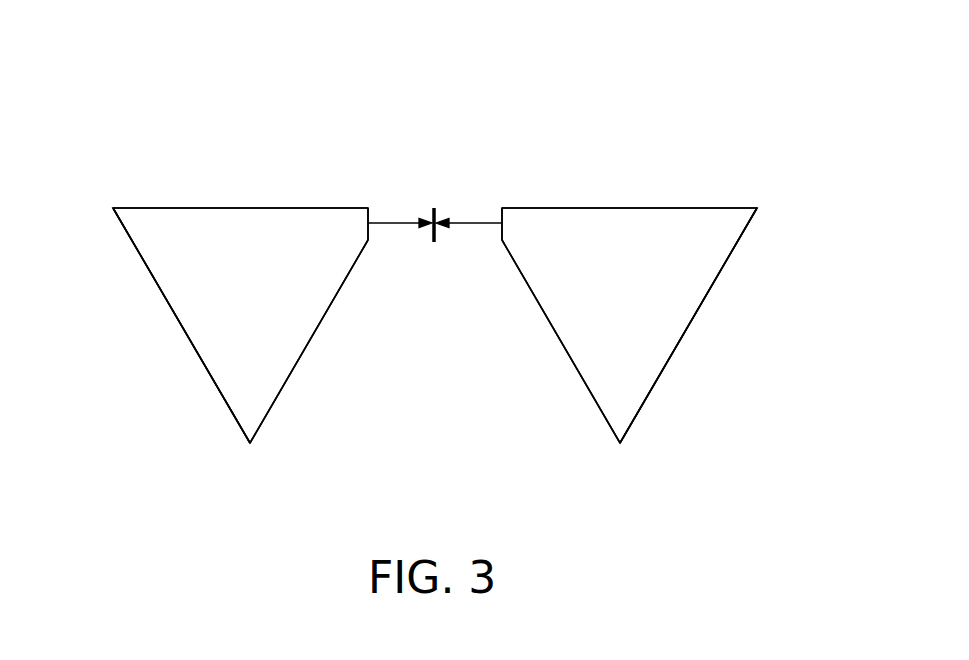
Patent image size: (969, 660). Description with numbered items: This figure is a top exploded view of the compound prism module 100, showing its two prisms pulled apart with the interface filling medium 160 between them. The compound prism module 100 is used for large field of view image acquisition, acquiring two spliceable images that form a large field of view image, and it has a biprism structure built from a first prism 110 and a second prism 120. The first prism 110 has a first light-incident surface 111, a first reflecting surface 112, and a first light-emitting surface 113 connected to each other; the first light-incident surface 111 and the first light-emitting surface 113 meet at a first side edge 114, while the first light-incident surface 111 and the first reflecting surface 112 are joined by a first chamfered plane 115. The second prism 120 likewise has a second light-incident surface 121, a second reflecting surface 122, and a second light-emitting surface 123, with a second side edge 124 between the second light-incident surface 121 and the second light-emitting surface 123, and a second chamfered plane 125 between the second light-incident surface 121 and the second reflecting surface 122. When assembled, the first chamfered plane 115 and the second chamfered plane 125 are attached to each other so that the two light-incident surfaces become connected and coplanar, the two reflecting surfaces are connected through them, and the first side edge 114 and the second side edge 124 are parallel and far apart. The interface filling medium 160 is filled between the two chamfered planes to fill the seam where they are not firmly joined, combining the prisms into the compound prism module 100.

The compound prism module 100 is at (641, 90).
The first prism 110 is at (178, 235).
The first light-incident surface 111 is at (187, 204).
The first reflecting surface 112 is at (298, 385).
The first light-emitting surface 113 is at (180, 344).
The first side edge 114 is at (113, 208).
The first chamfered plane 115 is at (364, 204).
The second prism 120 is at (690, 235).
The second light-incident surface 121 is at (684, 205).
The second reflecting surface 122 is at (572, 385).
The second light-emitting surface 123 is at (692, 344).
The second side edge 124 is at (757, 208).
The second chamfered plane 125 is at (505, 204).
The interface filling medium 160 is at (434, 208).